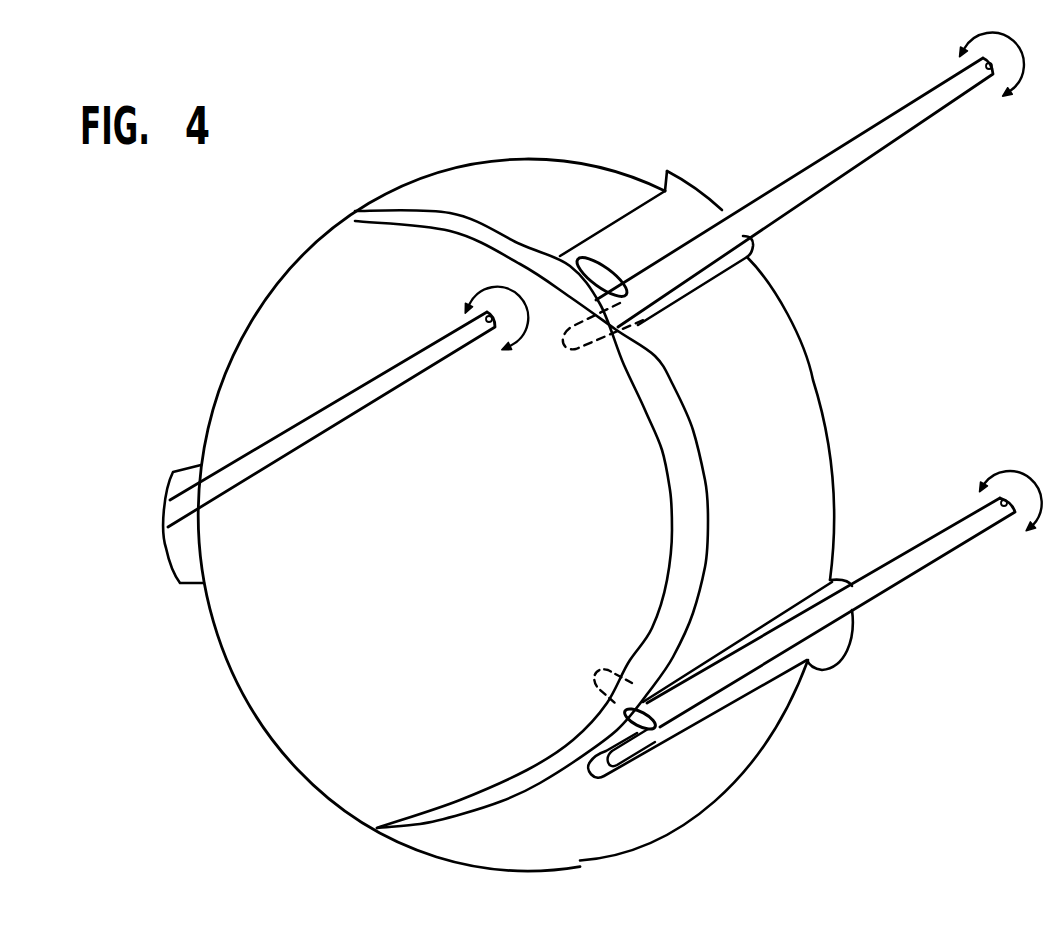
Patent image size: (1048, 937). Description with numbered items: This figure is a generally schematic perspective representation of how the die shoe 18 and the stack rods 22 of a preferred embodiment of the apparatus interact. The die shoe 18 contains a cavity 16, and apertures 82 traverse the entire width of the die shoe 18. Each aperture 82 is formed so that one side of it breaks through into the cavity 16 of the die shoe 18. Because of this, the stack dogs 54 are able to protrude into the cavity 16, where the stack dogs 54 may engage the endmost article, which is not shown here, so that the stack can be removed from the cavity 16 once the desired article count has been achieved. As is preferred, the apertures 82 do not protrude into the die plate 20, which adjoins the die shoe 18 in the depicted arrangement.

The cavity 16 is at (777, 303).
The die shoe 18 is at (918, 416).
The die plate 20 is at (655, 458).
The stack rods 22 is at (382, 397).
The stack dogs 54 is at (583, 258).
The apertures 82 is at (698, 228).